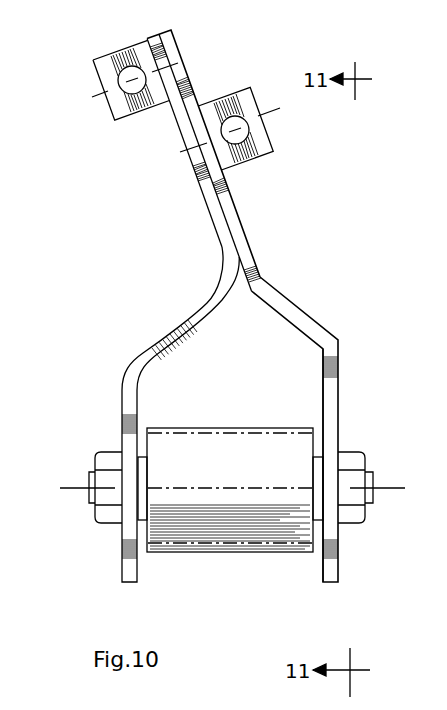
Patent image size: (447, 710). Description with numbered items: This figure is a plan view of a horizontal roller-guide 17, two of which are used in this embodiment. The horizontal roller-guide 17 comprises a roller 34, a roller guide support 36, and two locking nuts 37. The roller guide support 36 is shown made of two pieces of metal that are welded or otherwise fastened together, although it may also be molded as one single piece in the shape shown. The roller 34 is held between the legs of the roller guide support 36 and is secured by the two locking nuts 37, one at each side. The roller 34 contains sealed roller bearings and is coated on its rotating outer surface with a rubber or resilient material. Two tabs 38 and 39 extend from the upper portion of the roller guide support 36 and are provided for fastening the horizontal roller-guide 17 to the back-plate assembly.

The horizontal roller-guide 17 is at (202, 194).
The roller 34 is at (202, 552).
The roller guide support 36 is at (252, 249).
The locking nuts 37 is at (95, 453).
The tab 38 is at (208, 104).
The tab 39 is at (112, 55).